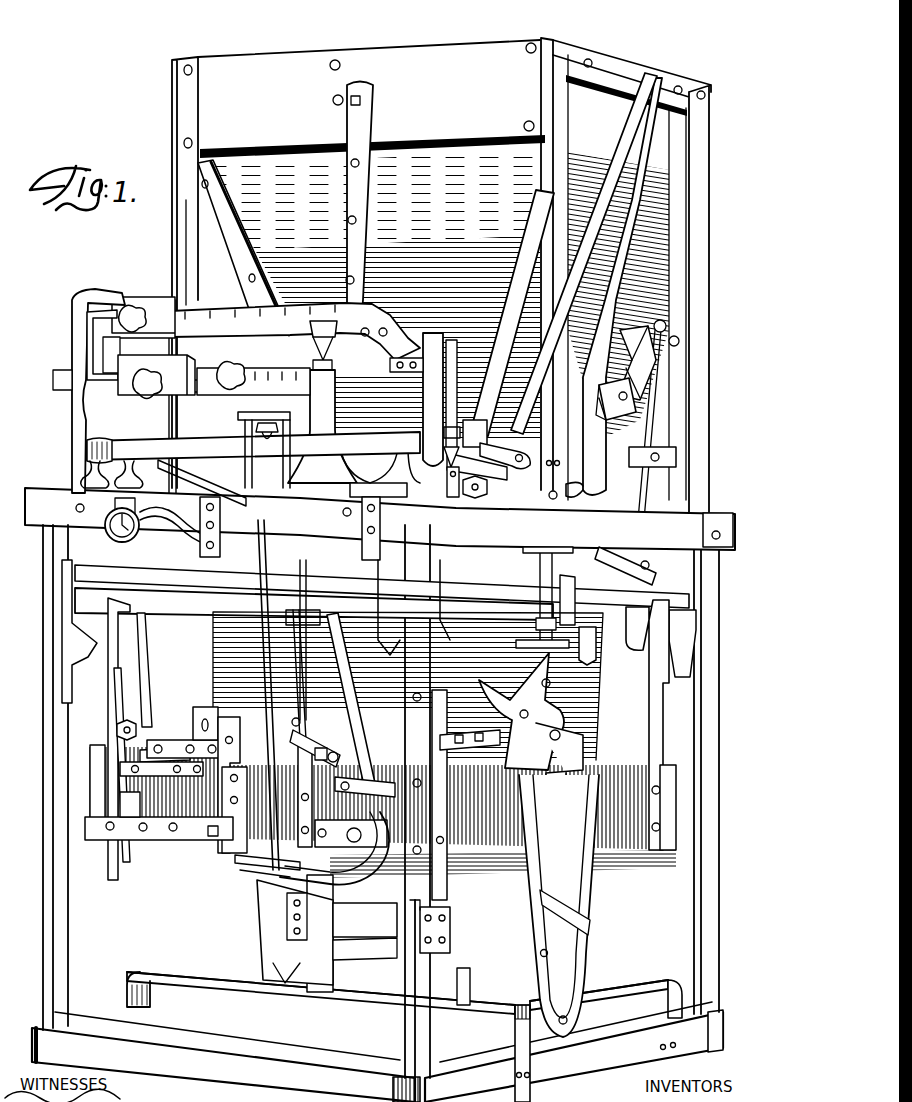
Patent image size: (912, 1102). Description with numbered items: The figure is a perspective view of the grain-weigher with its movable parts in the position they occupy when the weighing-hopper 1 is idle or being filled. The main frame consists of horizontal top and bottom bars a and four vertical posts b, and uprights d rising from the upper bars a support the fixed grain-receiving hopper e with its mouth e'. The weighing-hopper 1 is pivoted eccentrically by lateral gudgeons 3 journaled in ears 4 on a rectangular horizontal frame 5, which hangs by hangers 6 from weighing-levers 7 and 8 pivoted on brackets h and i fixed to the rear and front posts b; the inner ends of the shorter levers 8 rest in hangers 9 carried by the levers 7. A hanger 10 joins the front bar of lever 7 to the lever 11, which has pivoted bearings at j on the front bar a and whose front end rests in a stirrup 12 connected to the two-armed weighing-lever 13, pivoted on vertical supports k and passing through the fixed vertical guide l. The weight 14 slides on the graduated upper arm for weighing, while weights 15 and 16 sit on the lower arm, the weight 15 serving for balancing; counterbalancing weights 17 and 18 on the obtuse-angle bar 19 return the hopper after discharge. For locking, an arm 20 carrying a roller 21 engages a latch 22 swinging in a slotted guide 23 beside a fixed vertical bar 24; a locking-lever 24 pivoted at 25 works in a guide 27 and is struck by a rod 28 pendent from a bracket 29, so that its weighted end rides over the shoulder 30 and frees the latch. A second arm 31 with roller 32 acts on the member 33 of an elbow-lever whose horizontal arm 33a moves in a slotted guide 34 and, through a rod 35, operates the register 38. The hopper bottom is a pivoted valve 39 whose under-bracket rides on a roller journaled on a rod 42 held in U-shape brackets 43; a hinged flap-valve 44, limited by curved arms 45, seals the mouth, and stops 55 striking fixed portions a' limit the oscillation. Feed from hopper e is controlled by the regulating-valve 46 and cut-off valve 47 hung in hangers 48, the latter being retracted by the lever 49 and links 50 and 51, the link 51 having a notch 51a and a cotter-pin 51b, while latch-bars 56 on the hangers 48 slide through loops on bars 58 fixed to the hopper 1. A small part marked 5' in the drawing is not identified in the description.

The weighing-hopper 1 is at (215, 630).
The lateral pivots or gudgeons 3 is at (562, 730).
The ears 4 is at (559, 775).
The rectangular horizontal frame 5 is at (377, 811).
The rod 5' is at (184, 396).
The hangers 6 is at (120, 650).
The weighing-levers 7 is at (620, 592).
The weighing-levers 8 is at (314, 604).
The hangers 9 is at (566, 615).
The hanger 10 is at (263, 445).
The lever 11 is at (130, 442).
The stirrup or link 12 is at (425, 415).
The two-armed weighing-lever 13 is at (295, 331).
The weight 14 is at (143, 302).
The weight 15 is at (170, 385).
The weight 16 is at (236, 388).
The weight 17 is at (480, 375).
The weight 18 is at (204, 711).
The obtuse-angle bar 19 is at (244, 783).
The arm 20 is at (156, 728).
The antifriction-roller 21 is at (115, 732).
The latch 22 is at (142, 665).
The slotted guide 23 is at (135, 842).
The locking-lever 24 is at (117, 688).
The pivot 25 is at (238, 830).
The guide 27 is at (309, 749).
The rod 28 is at (294, 728).
The bracket 29 is at (320, 598).
The shoulder 30 is at (161, 747).
The arm 31 is at (470, 741).
The roller 32 is at (324, 743).
The arm or member of the elbow-lever 33 is at (361, 705).
The horizontal arm of the elbow-lever 33a is at (334, 848).
The slotted guide 34 is at (232, 862).
The rod 35 is at (240, 872).
The register 38 is at (112, 532).
The valve 39 is at (460, 972).
The rod 42 is at (563, 1026).
The U-shape brackets 43 is at (532, 935).
The flap-valve 44 is at (362, 938).
The curved arms 45 is at (420, 920).
The regulating-valve 46 is at (488, 450).
The cut-off valve 47 is at (590, 465).
The hangers 48 is at (648, 278).
The lever 49 is at (660, 320).
The link or bar 50 is at (626, 555).
The link or bar 51 is at (637, 392).
The elongated notch or recess 51a is at (657, 372).
The cotter-pin 51b is at (679, 342).
The stops 55 is at (260, 935).
The latches or latch-bars 56 is at (160, 463).
The bars 58 is at (468, 546).
The horizontal top and bottom bars a is at (380, 691).
The fixed portions of the main frame a' is at (397, 975).
The vertical bars or posts b is at (48, 835).
The vertical bars or uprights d is at (185, 222).
The grain-receiving hopper e is at (354, 287).
The mouth of the receiving-hopper e' is at (244, 247).
The brackets h is at (700, 632).
The brackets i is at (70, 645).
The pivoted bearings j is at (74, 474).
The vertical supports k is at (354, 409).
The fixed vertical guide l is at (97, 300).